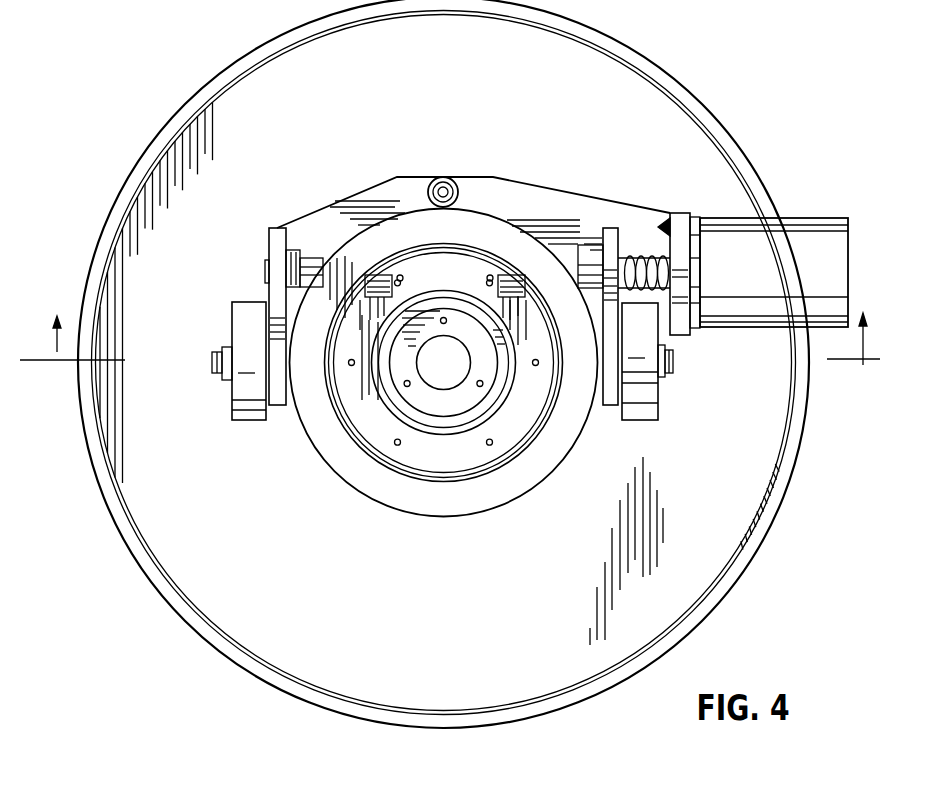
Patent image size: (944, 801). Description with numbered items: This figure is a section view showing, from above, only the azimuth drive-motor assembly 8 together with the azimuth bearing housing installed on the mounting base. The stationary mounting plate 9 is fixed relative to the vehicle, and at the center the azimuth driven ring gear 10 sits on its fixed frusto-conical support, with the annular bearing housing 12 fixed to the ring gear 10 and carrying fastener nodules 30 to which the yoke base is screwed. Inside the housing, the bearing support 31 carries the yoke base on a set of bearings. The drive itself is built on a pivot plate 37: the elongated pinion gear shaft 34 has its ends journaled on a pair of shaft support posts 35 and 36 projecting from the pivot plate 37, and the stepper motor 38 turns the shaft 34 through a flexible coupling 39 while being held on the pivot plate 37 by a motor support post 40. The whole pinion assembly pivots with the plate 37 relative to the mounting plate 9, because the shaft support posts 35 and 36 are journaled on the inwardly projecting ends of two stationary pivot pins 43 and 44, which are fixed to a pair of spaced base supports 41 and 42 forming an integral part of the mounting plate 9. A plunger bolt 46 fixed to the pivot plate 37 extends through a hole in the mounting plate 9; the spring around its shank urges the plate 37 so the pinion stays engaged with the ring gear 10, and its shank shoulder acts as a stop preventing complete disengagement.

The azimuth drive-motor assembly 8 is at (512, 112).
The mounting plate 9 is at (287, 95).
The azimuth driven ring gear 10 is at (511, 481).
The annular bearing housing 12 is at (421, 455).
The fastener nodules 30 is at (405, 282).
The bearing support 31 is at (393, 403).
The pinion gear shaft 34 is at (322, 262).
The shaft support post 35 is at (280, 238).
The shaft support post 36 is at (610, 233).
The pivot plate 37 is at (371, 200).
The stepper motor 38 is at (730, 244).
The flexible coupling 39 is at (640, 257).
The motor support post 40 is at (682, 337).
The base support 41 is at (249, 415).
The base support 42 is at (647, 403).
The pivot pin 43 is at (215, 370).
The pivot pin 44 is at (673, 375).
The plunger bolt 46 is at (443, 177).